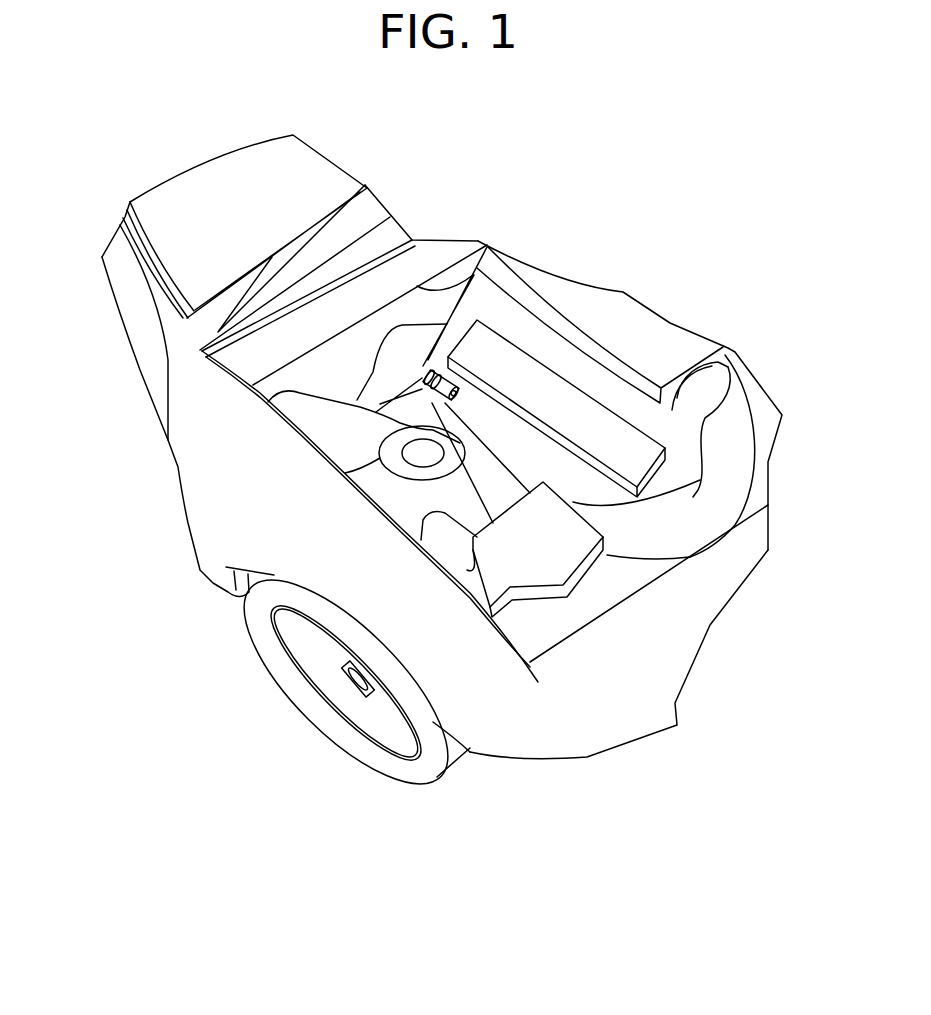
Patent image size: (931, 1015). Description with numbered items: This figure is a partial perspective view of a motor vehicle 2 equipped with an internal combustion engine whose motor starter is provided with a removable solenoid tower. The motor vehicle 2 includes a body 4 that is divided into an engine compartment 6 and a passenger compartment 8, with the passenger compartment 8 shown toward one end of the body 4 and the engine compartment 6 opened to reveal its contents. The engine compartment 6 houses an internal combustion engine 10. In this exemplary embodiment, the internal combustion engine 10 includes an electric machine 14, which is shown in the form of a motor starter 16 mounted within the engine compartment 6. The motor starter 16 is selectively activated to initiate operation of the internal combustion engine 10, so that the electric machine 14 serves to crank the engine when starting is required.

The motor vehicle 2 is at (430, 474).
The body 4 is at (218, 517).
The engine compartment 6 is at (617, 593).
The passenger compartment 8 is at (132, 314).
The internal combustion engine 10 is at (681, 491).
The electric machine 14 is at (476, 409).
The motor starter 16 is at (423, 367).